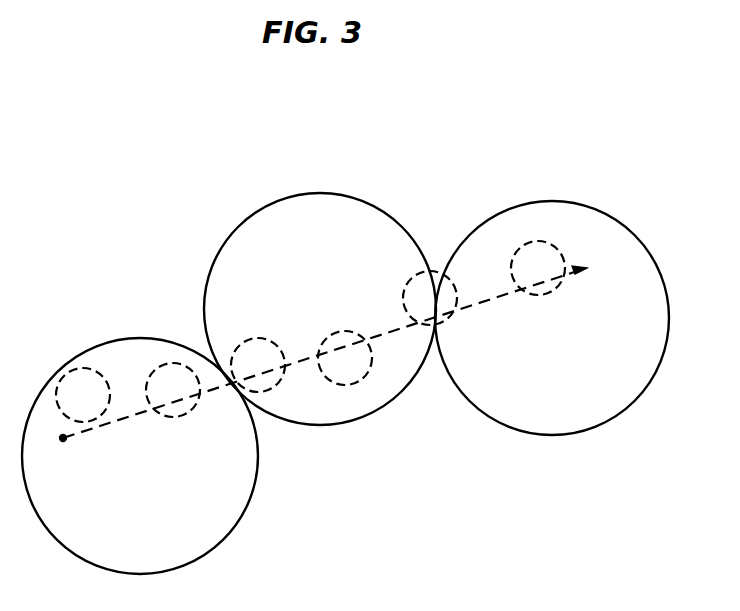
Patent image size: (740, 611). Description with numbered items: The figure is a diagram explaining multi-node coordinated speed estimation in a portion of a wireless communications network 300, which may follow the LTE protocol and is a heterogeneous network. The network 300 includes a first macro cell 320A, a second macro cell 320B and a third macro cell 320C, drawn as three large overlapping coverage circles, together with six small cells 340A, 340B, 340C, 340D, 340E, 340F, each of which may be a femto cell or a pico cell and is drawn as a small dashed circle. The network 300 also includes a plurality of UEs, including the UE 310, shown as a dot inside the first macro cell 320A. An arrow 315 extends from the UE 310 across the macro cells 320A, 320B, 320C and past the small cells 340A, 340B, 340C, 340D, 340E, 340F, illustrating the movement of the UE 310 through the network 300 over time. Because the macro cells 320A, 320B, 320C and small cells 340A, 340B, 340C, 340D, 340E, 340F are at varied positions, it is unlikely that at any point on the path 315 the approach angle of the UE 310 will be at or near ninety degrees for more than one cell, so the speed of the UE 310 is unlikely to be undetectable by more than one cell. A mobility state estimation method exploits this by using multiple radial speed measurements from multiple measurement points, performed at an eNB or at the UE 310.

The wireless communications network 300 is at (87, 162).
The UE 310 is at (66, 454).
The arrow 315 is at (143, 415).
The first macro cell 320A is at (140, 456).
The second macro cell 320B is at (320, 309).
The third macro cell 320C is at (552, 318).
The first small cell 340A is at (83, 395).
The second small cell 340B is at (173, 390).
The third small cell 340C is at (258, 365).
The fourth small cell 340D is at (345, 358).
The fifth small cell 340E is at (430, 298).
The sixth small cell 340F is at (538, 268).